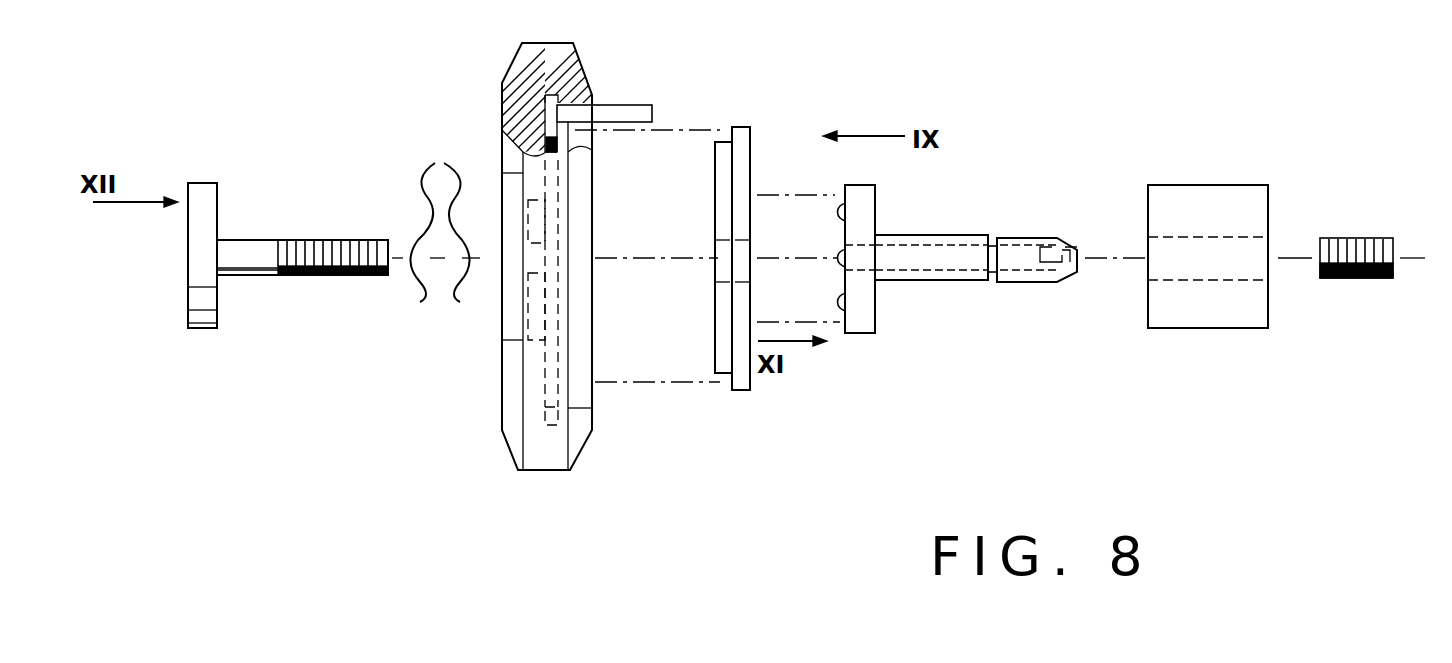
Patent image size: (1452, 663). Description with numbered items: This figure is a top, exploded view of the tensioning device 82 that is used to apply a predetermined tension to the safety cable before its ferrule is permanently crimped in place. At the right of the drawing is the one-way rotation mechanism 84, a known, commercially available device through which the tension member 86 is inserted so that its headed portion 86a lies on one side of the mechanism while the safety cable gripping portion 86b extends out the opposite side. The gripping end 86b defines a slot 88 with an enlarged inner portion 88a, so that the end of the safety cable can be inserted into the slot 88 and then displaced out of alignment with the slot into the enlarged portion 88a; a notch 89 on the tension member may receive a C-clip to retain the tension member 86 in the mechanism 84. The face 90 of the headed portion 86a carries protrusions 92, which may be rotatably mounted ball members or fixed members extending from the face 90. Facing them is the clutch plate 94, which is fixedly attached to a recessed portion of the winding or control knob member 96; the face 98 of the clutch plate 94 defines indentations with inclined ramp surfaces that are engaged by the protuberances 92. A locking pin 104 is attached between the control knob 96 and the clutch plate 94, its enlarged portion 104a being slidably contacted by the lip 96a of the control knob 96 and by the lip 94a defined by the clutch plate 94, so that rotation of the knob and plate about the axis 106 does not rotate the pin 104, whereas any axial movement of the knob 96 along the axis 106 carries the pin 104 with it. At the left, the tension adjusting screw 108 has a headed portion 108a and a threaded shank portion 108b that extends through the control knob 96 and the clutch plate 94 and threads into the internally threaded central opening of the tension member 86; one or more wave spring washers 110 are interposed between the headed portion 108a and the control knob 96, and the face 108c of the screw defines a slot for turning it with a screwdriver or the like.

The tensioning device 82 is at (1104, 156).
The one-way rotation mechanism 84 is at (1252, 313).
The tension member 86 is at (920, 282).
The headed portion 86a is at (858, 322).
The safety cable gripping portion 86b is at (1080, 252).
The slot 88 is at (1065, 278).
The enlarged inner portion 88a is at (1040, 250).
The notch 89 is at (992, 283).
The face 90 is at (838, 258).
The protrusion 92 is at (838, 207).
The clutch plate 94 is at (733, 380).
The lip 94a is at (722, 132).
The control knob member 96 is at (547, 460).
The lip 96a is at (552, 97).
The face 98 is at (745, 375).
The locking pin 104 is at (626, 112).
The enlarged portion 104a is at (518, 85).
The axis 106 is at (673, 258).
The tension adjusting screw 108 is at (245, 229).
The headed portion 108a is at (200, 328).
The threaded shank portion 108b is at (262, 275).
The face 108c is at (188, 311).
The wave spring washer 110 is at (437, 220).